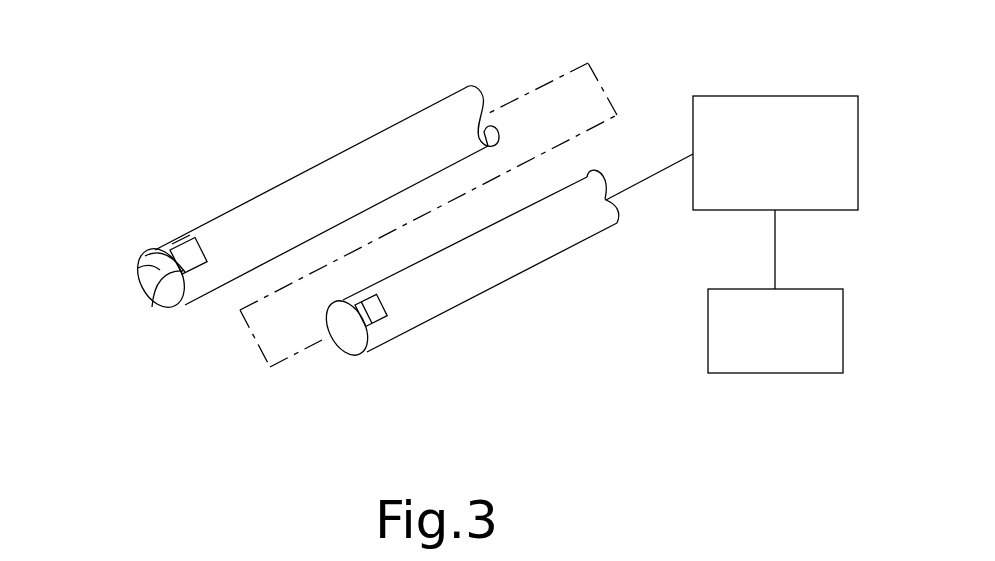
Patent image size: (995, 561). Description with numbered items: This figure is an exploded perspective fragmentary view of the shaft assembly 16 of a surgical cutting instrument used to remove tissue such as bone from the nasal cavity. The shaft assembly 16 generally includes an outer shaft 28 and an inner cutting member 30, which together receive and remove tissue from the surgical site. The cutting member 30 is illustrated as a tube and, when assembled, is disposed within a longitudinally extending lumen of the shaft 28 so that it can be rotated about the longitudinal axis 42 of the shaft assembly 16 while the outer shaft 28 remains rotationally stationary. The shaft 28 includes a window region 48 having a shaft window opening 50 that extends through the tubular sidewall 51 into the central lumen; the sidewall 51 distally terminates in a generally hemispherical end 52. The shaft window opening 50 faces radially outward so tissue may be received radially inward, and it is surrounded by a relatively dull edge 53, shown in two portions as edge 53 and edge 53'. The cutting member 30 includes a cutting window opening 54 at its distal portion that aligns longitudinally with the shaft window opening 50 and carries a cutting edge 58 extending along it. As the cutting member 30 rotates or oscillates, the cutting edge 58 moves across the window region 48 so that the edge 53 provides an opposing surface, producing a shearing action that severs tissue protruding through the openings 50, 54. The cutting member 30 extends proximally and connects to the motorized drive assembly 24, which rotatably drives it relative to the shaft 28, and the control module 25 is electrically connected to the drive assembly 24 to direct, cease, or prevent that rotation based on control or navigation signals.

The shaft assembly 16 is at (183, 118).
The motorized drive assembly 24 is at (775, 96).
The control module 25 is at (758, 373).
The outer shaft 28 is at (413, 114).
The inner cutting member 30 is at (576, 247).
The longitudinal axis 42 is at (537, 86).
The window region 48 is at (180, 236).
The shaft window opening 50 is at (190, 257).
The tubular sidewall 51 is at (263, 198).
The hemispherical end 52 is at (148, 284).
The edge 53 is at (180, 327).
The slot edge 53' is at (111, 268).
The cutting window opening 54 is at (386, 306).
The cutting edge 58 is at (368, 324).